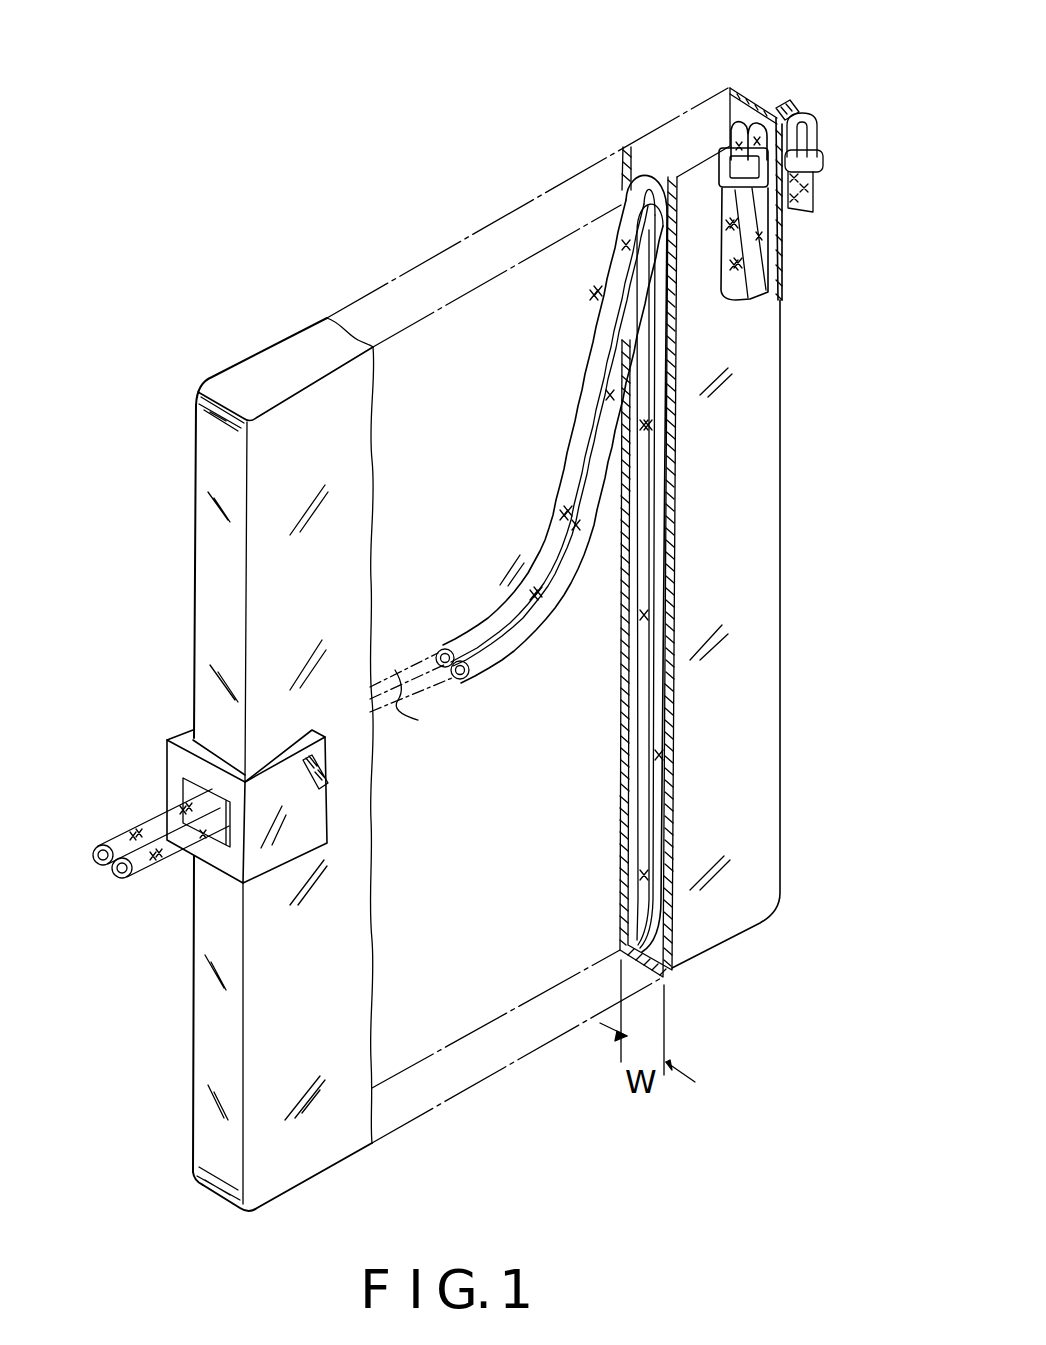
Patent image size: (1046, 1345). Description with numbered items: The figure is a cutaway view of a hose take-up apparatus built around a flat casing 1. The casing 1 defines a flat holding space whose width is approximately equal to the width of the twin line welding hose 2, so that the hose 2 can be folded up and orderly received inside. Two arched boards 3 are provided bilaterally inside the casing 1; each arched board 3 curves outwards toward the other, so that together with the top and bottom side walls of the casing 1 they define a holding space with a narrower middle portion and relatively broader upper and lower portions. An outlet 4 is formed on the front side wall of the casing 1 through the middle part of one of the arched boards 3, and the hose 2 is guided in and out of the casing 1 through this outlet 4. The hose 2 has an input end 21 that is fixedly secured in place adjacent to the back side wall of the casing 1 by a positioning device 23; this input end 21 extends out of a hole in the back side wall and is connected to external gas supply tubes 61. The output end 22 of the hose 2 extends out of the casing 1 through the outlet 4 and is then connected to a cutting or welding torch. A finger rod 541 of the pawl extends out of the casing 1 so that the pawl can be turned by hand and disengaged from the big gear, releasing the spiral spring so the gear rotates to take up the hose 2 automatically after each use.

The flat casing 1 is at (272, 373).
The twin line welding hose 2 is at (590, 338).
The arched board 3 is at (747, 243).
The outlet 4 is at (220, 848).
The input end 21 is at (727, 142).
The output end 22 is at (157, 827).
The positioning device 23 is at (716, 172).
The gas supply tubes 61 is at (813, 187).
The finger rod 541 is at (306, 792).